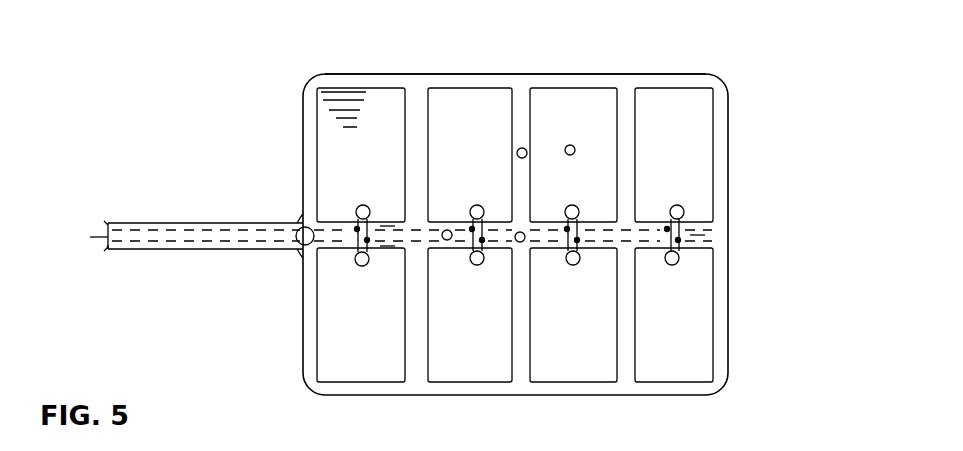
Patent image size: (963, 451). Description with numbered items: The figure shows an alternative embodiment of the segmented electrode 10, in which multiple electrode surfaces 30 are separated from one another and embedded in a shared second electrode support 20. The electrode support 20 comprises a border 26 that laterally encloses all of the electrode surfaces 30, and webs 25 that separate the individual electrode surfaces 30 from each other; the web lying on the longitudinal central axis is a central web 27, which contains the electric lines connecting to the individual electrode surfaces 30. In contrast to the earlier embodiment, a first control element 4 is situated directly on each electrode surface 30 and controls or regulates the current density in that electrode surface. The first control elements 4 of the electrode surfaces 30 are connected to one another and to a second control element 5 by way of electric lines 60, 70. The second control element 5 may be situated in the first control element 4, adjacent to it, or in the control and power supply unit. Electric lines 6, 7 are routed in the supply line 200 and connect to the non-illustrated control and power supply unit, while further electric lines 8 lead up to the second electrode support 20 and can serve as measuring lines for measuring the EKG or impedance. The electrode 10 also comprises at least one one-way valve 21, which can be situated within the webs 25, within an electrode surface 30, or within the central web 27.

The first control element 4 is at (683, 207).
The second control element 5 is at (300, 228).
The electric line 6 is at (108, 247).
The electric line 7 is at (104, 228).
The further electric lines 8 is at (108, 237).
The segmented electrode 10 is at (786, 109).
The second electrode support 20 is at (722, 361).
The one-way valve 21 is at (518, 151).
The webs 25 is at (412, 110).
The border 26 is at (665, 80).
The central web 27 is at (698, 235).
The electrode surfaces 30 is at (680, 157).
The electric line 60 is at (385, 238).
The electric line 70 is at (392, 228).
The supply line 200 is at (193, 250).